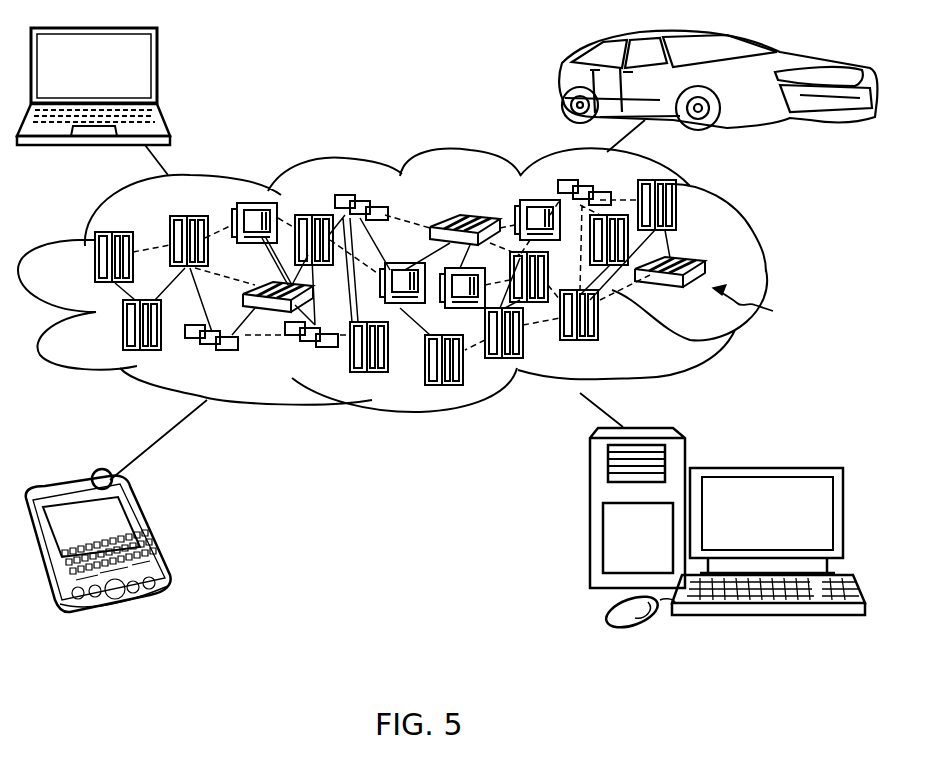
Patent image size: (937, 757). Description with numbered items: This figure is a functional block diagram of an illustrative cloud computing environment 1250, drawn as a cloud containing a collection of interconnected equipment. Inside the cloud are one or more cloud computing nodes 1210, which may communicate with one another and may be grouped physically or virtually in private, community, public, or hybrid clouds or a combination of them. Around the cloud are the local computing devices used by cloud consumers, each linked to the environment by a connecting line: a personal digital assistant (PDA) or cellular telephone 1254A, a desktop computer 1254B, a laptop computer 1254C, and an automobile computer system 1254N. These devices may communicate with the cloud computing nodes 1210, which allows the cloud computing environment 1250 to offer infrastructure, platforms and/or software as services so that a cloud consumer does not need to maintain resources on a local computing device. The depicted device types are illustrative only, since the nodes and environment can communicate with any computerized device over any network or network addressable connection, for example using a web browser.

The cloud computing environment 1250 is at (760, 262).
The cloud computing nodes 1210 is at (763, 303).
The laptop computer 1254C is at (157, 72).
The automobile computer system 1254N is at (562, 80).
The personal digital assistant (PDA) or cellular telephone 1254A is at (150, 535).
The desktop computer 1254B is at (775, 450).